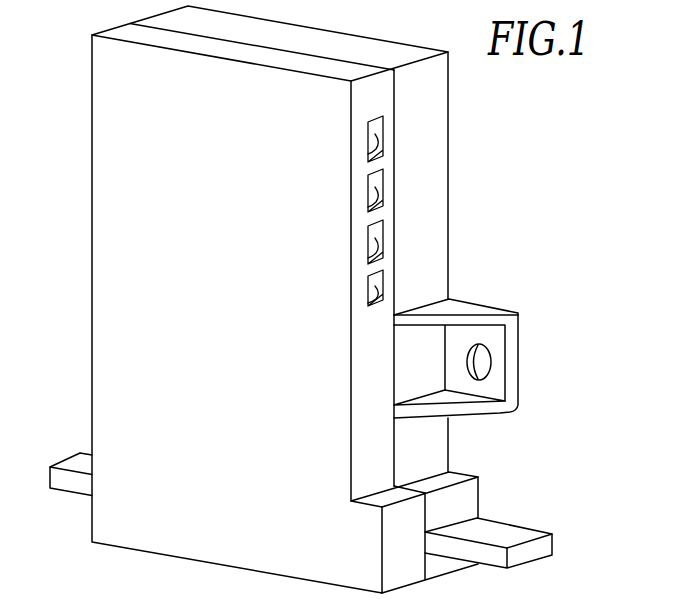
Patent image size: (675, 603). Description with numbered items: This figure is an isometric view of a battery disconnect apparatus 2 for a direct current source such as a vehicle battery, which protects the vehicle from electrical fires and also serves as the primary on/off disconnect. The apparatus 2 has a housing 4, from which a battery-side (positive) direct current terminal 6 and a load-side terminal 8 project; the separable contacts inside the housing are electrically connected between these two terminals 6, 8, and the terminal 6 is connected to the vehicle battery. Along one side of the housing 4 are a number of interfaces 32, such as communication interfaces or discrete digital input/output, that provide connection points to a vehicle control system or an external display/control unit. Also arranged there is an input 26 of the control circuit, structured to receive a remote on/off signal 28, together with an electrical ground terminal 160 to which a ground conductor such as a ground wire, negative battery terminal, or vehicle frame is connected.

The battery disconnect apparatus 2 is at (64, 132).
The housing 4 is at (457, 139).
The direct current terminal 6 is at (77, 463).
The load terminal 8 is at (515, 535).
The input 26 is at (377, 239).
The remote on/off signal 28 is at (388, 249).
The interfaces 32 is at (377, 142).
The electrical ground terminal 160 is at (377, 294).